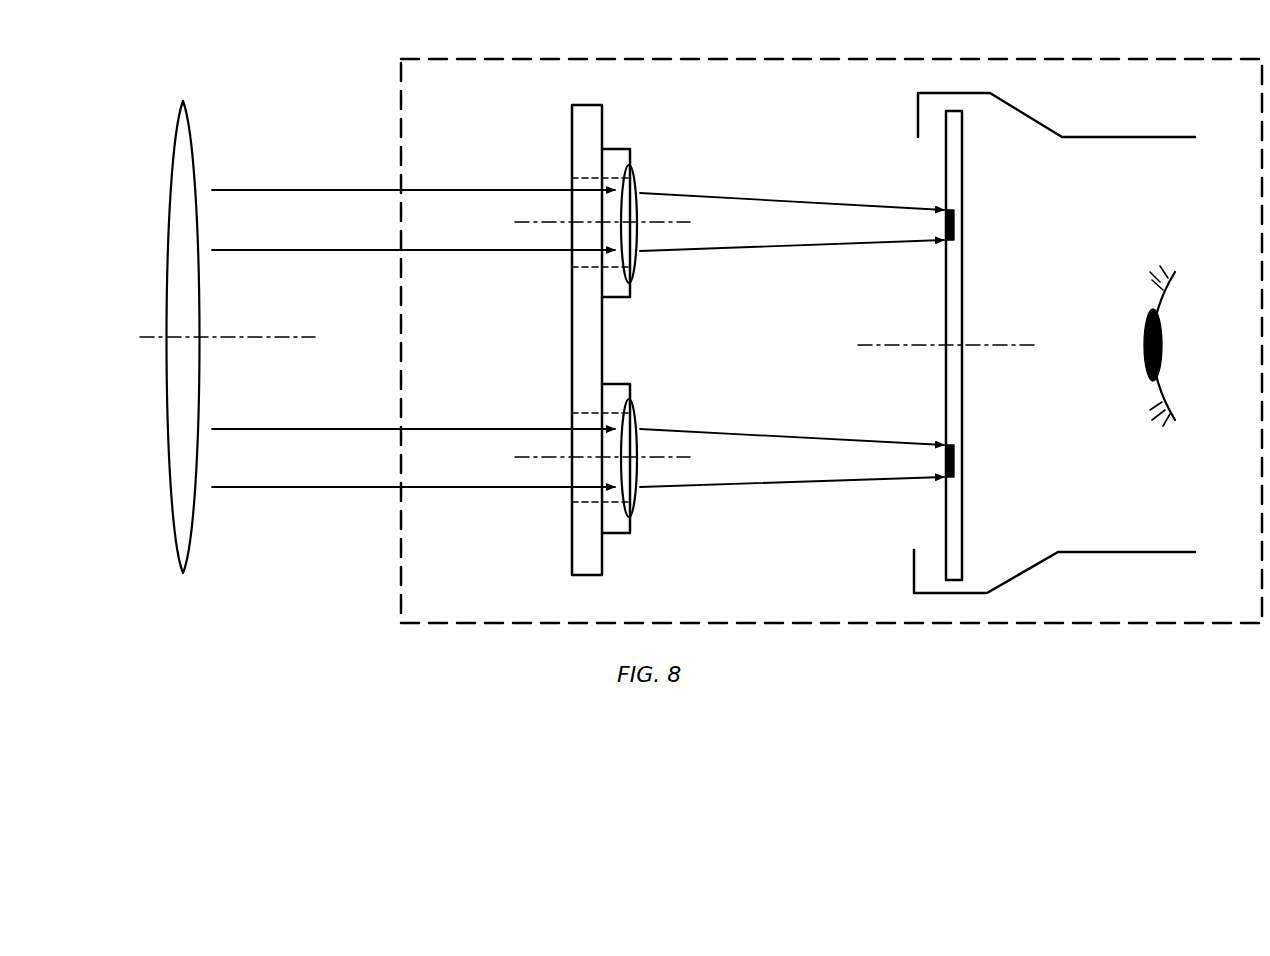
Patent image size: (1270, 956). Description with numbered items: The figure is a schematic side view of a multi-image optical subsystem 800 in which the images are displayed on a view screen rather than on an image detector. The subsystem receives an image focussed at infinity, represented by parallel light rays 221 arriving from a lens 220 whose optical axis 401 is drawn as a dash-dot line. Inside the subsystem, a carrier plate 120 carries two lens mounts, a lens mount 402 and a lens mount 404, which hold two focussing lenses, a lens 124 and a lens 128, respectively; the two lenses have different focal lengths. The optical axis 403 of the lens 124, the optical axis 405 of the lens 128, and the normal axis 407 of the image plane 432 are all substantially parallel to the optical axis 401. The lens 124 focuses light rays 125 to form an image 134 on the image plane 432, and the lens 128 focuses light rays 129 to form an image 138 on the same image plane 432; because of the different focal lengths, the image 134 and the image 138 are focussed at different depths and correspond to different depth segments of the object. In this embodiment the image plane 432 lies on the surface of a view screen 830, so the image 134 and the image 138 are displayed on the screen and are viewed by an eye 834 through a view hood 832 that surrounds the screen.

The multi-image optical subsystem 800 is at (400, 592).
The lens 220 is at (183, 575).
The parallel light rays 221 is at (278, 189).
The optical axis 401 is at (252, 337).
The carrier plate 120 is at (572, 561).
The lens mount 402 is at (630, 163).
The lens mount 404 is at (630, 400).
The lens 124 is at (637, 270).
The lens 128 is at (637, 506).
The optical axis 403 is at (528, 222).
The optical axis 405 is at (528, 457).
The light rays 125 is at (733, 200).
The light rays 129 is at (733, 435).
The view screen 830 is at (951, 522).
The image 134 is at (945, 225).
The image 138 is at (945, 460).
The image plane 432 is at (946, 160).
The view hood 832 is at (1112, 552).
The normal axis 407 is at (871, 345).
The eye 834 is at (1163, 345).